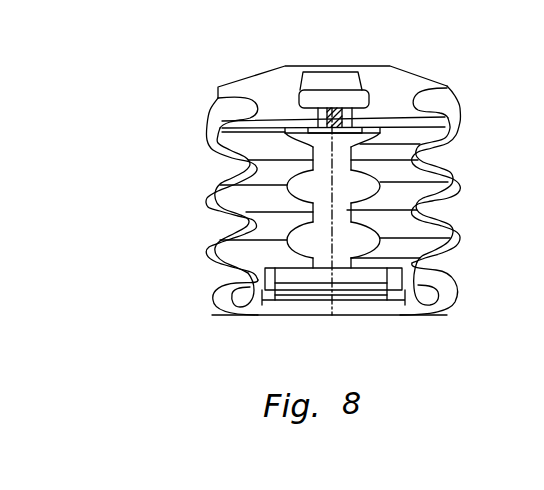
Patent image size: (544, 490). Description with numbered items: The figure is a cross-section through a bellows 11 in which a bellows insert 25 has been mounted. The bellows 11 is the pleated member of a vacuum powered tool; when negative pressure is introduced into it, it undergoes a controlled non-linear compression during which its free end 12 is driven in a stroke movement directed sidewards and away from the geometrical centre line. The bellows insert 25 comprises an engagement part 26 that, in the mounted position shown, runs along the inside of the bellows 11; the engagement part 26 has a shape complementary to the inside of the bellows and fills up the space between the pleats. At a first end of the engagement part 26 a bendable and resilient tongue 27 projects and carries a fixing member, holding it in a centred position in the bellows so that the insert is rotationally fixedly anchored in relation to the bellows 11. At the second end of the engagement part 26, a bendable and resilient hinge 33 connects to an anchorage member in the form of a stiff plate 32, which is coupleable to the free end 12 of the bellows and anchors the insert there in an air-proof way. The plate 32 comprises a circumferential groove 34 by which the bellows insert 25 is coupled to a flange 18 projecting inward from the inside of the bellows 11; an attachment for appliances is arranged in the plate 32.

The bellows 11 is at (211, 162).
The free end of the bellows 12 is at (213, 317).
The flange 18 is at (262, 315).
The bellows insert 25 is at (277, 198).
The engagement part 26 is at (358, 186).
The tongue 27 is at (420, 144).
The plate 32 is at (367, 315).
The hinge 33 is at (352, 262).
The circumferential groove 34 is at (313, 318).